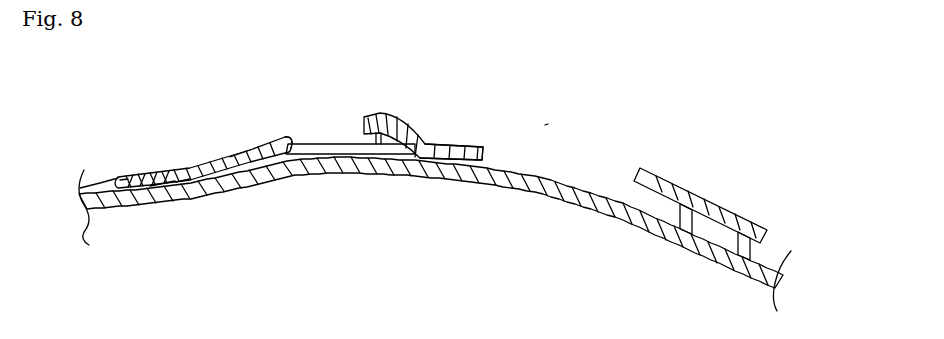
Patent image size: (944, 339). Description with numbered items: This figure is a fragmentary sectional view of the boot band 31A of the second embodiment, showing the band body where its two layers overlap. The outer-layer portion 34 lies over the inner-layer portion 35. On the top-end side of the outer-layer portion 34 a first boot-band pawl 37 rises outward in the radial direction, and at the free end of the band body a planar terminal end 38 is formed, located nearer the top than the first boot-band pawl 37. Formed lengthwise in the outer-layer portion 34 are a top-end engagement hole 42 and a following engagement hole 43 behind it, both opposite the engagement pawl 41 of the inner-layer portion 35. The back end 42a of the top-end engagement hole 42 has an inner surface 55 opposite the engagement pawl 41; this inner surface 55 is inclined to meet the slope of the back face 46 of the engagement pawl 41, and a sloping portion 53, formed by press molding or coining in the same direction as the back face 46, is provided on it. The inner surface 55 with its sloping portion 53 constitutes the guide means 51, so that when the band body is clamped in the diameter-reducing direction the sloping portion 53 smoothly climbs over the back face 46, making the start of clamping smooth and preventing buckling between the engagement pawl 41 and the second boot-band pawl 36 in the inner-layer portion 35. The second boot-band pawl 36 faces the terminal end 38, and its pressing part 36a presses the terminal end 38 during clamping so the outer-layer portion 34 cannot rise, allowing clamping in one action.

The boot band 31A is at (559, 117).
The outer-layer portion 34 is at (133, 126).
The inner-layer portion 35 is at (626, 237).
The second boot-band pawl 36 is at (739, 213).
The pressing part 36a is at (674, 185).
The first boot-band pawl 37 is at (375, 113).
The planar terminal end 38 is at (450, 149).
The engagement pawl 41 is at (282, 168).
The top-end engagement hole 42 is at (197, 157).
The back end 42a is at (170, 160).
The following engagement hole 43 is at (93, 186).
The back face 46 is at (270, 140).
The guide means 51 is at (164, 149).
The sloping portion 53 is at (172, 182).
The inner surface 55 is at (186, 178).